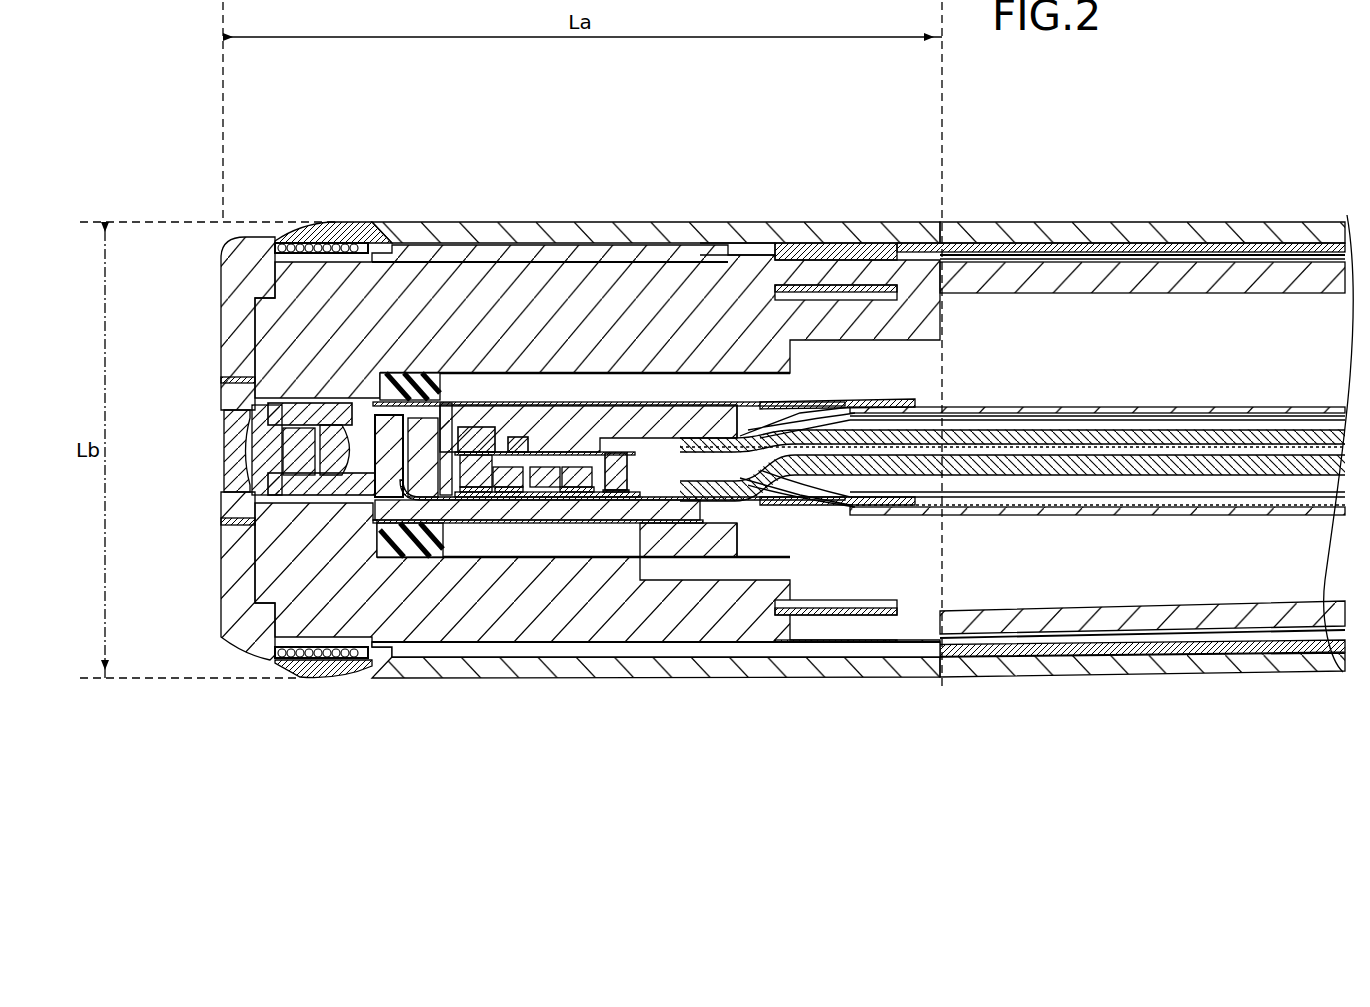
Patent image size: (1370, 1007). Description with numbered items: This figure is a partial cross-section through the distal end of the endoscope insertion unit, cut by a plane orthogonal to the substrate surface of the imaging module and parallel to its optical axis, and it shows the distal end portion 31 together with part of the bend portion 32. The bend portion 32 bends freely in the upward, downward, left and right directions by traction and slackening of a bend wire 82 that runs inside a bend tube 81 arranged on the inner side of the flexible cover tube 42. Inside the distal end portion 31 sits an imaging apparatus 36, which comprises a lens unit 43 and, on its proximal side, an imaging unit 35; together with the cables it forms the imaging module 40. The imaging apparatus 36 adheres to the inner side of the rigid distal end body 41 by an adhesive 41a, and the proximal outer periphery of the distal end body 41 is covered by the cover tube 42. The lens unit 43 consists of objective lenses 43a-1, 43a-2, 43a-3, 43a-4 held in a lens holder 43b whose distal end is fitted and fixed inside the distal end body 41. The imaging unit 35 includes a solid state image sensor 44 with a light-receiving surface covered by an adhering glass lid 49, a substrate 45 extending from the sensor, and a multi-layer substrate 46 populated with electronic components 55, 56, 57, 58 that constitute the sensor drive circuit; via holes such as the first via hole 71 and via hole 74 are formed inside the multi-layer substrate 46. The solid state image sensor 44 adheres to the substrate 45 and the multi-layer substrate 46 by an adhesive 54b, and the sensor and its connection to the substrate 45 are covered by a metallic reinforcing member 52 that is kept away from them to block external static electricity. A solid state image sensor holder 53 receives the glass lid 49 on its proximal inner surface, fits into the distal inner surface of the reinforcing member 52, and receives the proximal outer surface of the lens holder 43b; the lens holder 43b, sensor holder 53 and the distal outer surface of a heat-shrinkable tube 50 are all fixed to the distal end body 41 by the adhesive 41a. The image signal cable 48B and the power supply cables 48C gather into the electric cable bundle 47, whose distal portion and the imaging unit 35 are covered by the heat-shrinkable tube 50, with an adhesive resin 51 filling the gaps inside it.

The distal end portion 31 is at (745, 221).
The bend portion 32 is at (1032, 221).
The imaging unit 35 is at (900, 387).
The imaging apparatus 36 is at (537, 510).
The imaging module 40 is at (760, 815).
The distal end body 41 is at (512, 272).
The adhesive 41a is at (437, 405).
The cover tube 42 is at (1128, 236).
The lens unit 43 is at (390, 160).
The objective lens 43a-1 is at (224, 443).
The objective lens 43a-2 is at (275, 425).
The objective lens 43a-3 is at (302, 440).
The objective lens 43a-4 is at (336, 435).
The lens holder 43b is at (240, 379).
The solid state image sensor 44 is at (460, 490).
The substrate 45 is at (565, 490).
The multi-layer substrate 46 is at (650, 495).
The electric cable bundle 47 is at (1010, 403).
The image signal cable 48B is at (687, 433).
The power supply cable 48C is at (728, 502).
The glass lid 49 is at (440, 500).
The heat-shrinkable tube 50 is at (835, 408).
The adhesive resin 51 is at (785, 408).
The reinforcing member 52 is at (442, 418).
The solid state image sensor holder 53 is at (405, 385).
The adhesive 54b is at (478, 492).
The electronic component 55 is at (492, 440).
The electronic component 56 is at (526, 450).
The electronic component 57 is at (562, 468).
The electronic component 58 is at (585, 460).
The via hole 71 is at (512, 490).
The via hole 74 is at (600, 497).
The bend tube 81 is at (1207, 248).
The bend wire 82 is at (1278, 275).